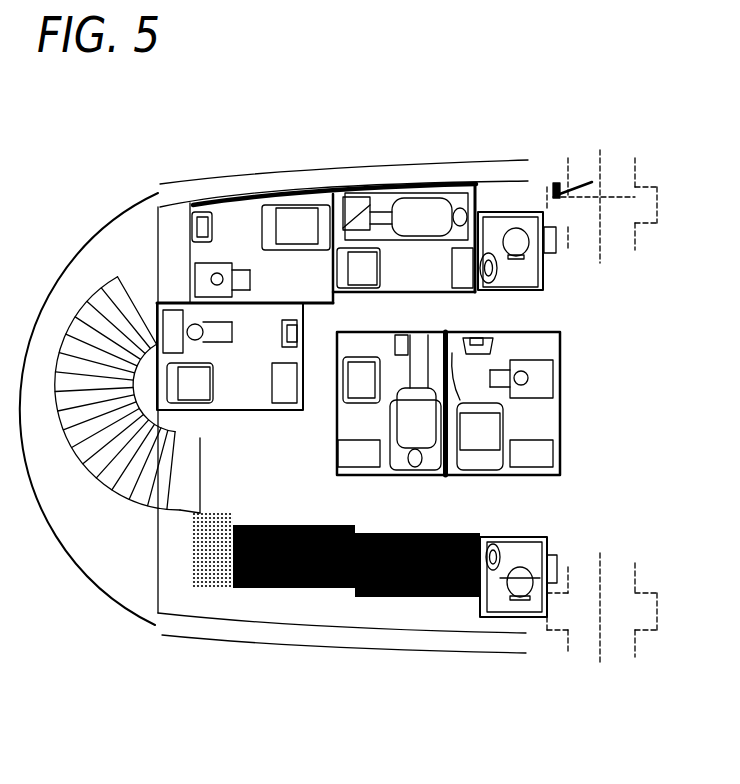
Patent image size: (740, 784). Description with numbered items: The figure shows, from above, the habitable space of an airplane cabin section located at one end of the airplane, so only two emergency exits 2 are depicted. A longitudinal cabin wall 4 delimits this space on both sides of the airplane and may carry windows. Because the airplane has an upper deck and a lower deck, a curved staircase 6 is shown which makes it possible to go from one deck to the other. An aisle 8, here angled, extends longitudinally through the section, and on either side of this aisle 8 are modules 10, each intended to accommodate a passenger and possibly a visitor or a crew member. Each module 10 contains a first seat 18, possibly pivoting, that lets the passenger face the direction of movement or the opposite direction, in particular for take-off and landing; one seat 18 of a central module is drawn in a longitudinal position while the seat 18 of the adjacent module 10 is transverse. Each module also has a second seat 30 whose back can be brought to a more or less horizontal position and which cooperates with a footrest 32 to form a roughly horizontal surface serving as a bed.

The emergency exit 2 is at (585, 173).
The cabin wall 4 is at (424, 174).
The staircase 6 is at (135, 486).
The aisle 8 is at (538, 308).
The module 10 is at (333, 187).
The first seat 18 is at (335, 400).
The second seat 30 is at (157, 297).
The footrest 32 is at (199, 205).